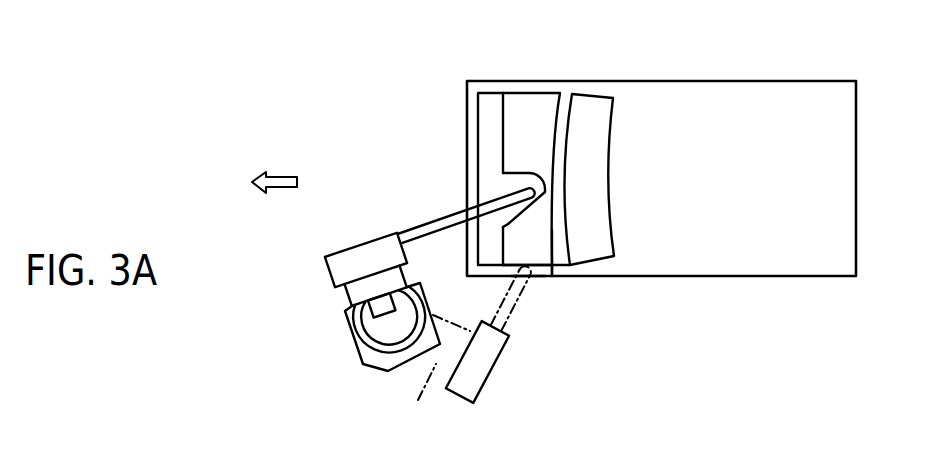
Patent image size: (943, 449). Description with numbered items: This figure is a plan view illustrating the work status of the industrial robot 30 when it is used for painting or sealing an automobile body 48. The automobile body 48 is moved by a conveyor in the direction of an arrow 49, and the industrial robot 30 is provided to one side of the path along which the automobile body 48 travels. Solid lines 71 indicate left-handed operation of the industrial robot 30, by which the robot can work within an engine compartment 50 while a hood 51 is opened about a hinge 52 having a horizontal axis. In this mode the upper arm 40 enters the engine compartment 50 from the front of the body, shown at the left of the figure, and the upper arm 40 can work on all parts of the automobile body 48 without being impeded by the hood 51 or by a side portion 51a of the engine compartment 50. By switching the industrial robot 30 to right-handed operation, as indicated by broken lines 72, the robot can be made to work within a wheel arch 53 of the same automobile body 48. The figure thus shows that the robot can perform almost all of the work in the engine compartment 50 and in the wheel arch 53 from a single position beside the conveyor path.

The industrial robot 30 is at (342, 337).
The upper arm 40 is at (508, 200).
The automobile body 48 is at (602, 95).
The arrow 49 is at (283, 180).
The engine compartment 50 is at (495, 115).
The hood 51 is at (526, 93).
The side portion of the engine compartment 51a is at (552, 264).
The hinge 52 is at (565, 258).
The wheel arch 53 is at (538, 278).
The solid lines 71 is at (357, 255).
The broken lines 72 is at (416, 402).